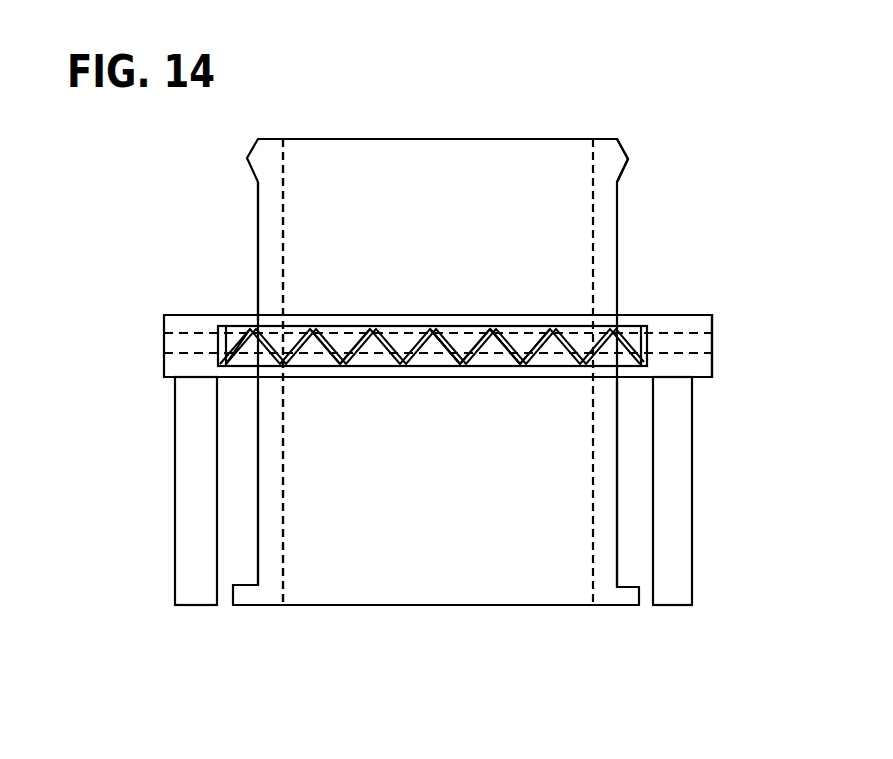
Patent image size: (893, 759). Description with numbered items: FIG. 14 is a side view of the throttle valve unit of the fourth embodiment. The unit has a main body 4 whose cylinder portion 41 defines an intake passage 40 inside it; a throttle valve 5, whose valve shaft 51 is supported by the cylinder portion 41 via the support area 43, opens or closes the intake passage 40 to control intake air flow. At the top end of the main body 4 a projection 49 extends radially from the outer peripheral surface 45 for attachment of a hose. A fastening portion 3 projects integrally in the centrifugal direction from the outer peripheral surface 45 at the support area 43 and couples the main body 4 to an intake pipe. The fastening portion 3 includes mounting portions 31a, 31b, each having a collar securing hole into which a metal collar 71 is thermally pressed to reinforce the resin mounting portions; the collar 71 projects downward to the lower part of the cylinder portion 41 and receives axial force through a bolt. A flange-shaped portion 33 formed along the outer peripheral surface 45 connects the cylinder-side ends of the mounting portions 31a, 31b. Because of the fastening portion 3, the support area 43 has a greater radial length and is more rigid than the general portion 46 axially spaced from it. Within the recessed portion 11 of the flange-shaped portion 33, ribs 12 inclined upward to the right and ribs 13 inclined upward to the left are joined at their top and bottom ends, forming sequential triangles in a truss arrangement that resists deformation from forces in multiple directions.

The fastening portion 3 is at (642, 320).
The main body 4 is at (622, 199).
The throttle valve 5 is at (521, 342).
The recessed portion 11 is at (508, 368).
The rib 12 is at (362, 368).
The rib 13 is at (320, 368).
The mounting portion 31a is at (183, 322).
The mounting portion 31b is at (687, 323).
The flange-shaped portion 33 is at (445, 368).
The intake passage 40 is at (302, 175).
The cylinder portion 41 is at (273, 222).
The support area 43 is at (247, 365).
The outer peripheral surface 45 is at (617, 403).
The general portion 46 is at (257, 493).
The projection 49 is at (617, 158).
The valve shaft 51 is at (405, 333).
The collar 71 is at (187, 527).